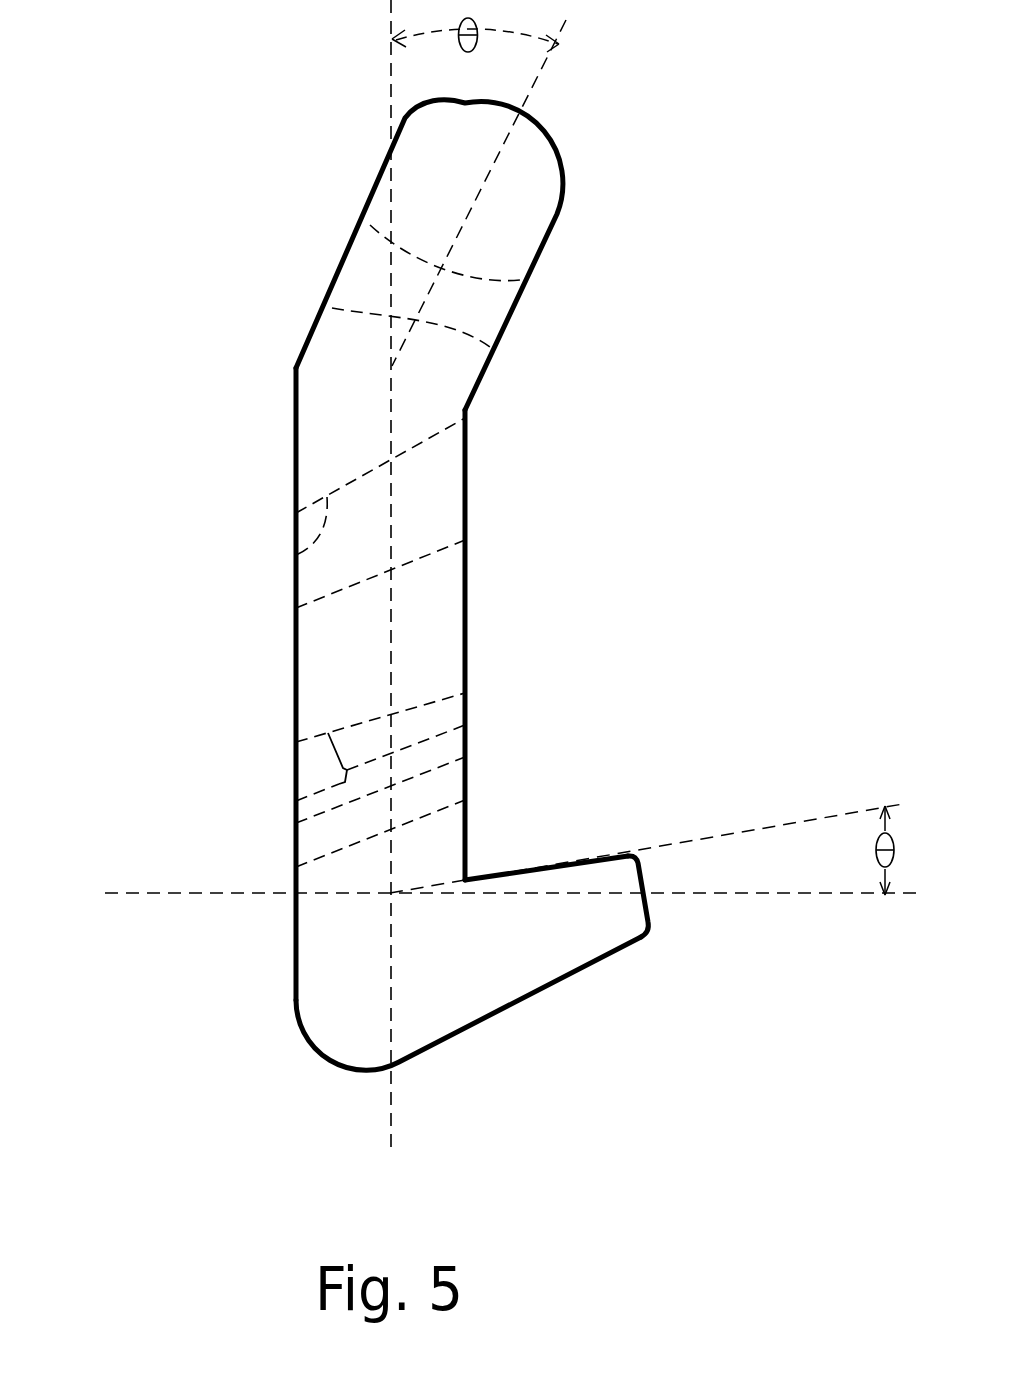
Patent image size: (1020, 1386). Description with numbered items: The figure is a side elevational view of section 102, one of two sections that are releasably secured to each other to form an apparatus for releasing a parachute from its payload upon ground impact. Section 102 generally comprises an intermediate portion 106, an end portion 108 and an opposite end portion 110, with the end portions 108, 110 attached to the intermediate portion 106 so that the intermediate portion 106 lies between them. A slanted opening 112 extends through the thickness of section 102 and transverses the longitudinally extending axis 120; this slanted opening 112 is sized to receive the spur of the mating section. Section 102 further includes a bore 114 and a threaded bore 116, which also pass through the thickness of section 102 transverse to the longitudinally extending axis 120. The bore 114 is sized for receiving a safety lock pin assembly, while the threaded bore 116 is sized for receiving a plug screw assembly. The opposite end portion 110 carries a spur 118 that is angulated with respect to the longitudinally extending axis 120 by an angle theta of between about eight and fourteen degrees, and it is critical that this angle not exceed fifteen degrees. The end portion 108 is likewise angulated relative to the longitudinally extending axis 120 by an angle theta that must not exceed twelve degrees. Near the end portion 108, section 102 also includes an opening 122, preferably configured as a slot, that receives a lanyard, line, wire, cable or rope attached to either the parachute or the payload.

The section 102 is at (233, 150).
The intermediate portion 106 is at (131, 338).
The end portion 108 is at (560, 153).
The opposite end portion 110 is at (448, 1040).
The slanted opening 112 is at (297, 553).
The bore 114 is at (326, 763).
The threaded bore 116 is at (318, 843).
The spur 118 is at (643, 945).
The longitudinally extending axis 120 is at (396, 61).
The opening 122 is at (487, 300).